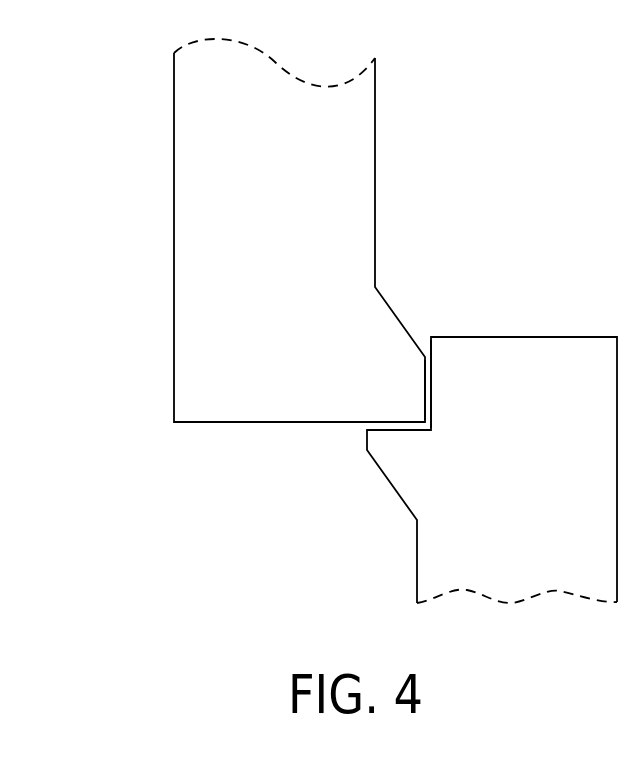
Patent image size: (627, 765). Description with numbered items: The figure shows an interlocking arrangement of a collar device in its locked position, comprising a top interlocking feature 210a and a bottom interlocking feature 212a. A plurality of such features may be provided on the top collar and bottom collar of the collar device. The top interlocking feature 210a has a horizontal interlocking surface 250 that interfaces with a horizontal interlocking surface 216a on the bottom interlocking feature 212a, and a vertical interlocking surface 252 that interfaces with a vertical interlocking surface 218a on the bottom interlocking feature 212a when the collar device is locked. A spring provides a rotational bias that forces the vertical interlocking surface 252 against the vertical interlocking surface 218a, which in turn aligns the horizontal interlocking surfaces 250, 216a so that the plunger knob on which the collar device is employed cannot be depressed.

The top interlocking feature 210a is at (307, 238).
The bottom interlocking feature 212a is at (548, 512).
The horizontal interlocking surface 250 is at (312, 414).
The vertical interlocking surface 252 is at (416, 383).
The vertical interlocking surface 218a is at (440, 380).
The horizontal interlocking surface 216a is at (391, 439).